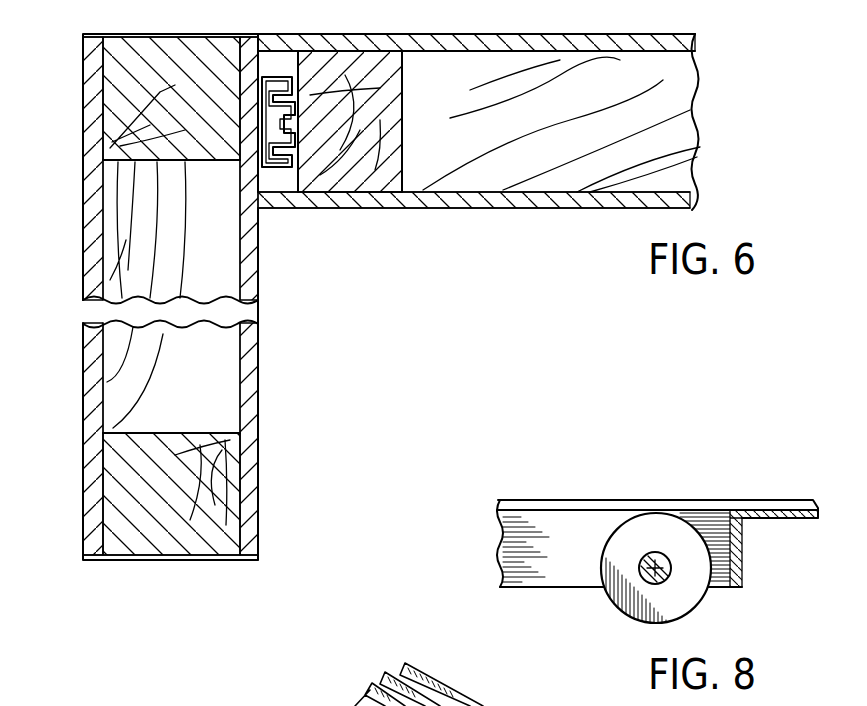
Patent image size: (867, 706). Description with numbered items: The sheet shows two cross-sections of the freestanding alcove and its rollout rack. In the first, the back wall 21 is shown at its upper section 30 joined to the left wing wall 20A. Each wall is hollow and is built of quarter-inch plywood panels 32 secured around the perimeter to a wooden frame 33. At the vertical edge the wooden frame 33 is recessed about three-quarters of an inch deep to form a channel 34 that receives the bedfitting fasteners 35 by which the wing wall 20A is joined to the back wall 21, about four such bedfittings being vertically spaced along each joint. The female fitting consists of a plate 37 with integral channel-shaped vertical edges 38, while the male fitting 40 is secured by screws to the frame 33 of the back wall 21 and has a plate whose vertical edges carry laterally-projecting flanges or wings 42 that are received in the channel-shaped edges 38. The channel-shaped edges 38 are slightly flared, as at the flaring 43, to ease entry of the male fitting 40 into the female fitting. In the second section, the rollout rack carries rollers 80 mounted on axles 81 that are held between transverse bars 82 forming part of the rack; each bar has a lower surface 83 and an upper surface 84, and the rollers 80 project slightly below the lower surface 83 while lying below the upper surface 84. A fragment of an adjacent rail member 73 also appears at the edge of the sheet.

In FIG. 6, the back wall 21 is at (638, 35).
In FIG. 6, the upper section 30 is at (522, 36).
In FIG. 6, the plywood panels 32 is at (700, 44).
In FIG. 6, the wooden frame 33 is at (165, 44).
In FIG. 6, the channel 34 is at (289, 58).
In FIG. 6, the bedfitting fasteners 35 is at (293, 182).
In FIG. 6, the plate 37 is at (256, 136).
In FIG. 6, the channel-shaped vertical edges 38 is at (285, 172).
In FIG. 6, the male fitting 40 is at (305, 118).
In FIG. 6, the flanges or wings 42 is at (270, 76).
In FIG. 6, the flaring 43 is at (403, 82).
In FIG. 6, the wing wall 20A is at (266, 404).
In FIG. 8, the rollers 80 is at (688, 606).
In FIG. 8, the axles 81 is at (646, 562).
In FIG. 8, the transverse bars 82 is at (513, 517).
In FIG. 8, the lower surface 83 is at (510, 587).
In FIG. 8, the upper surface 84 is at (542, 510).
In FIG. 8, the track member 73 is at (515, 705).